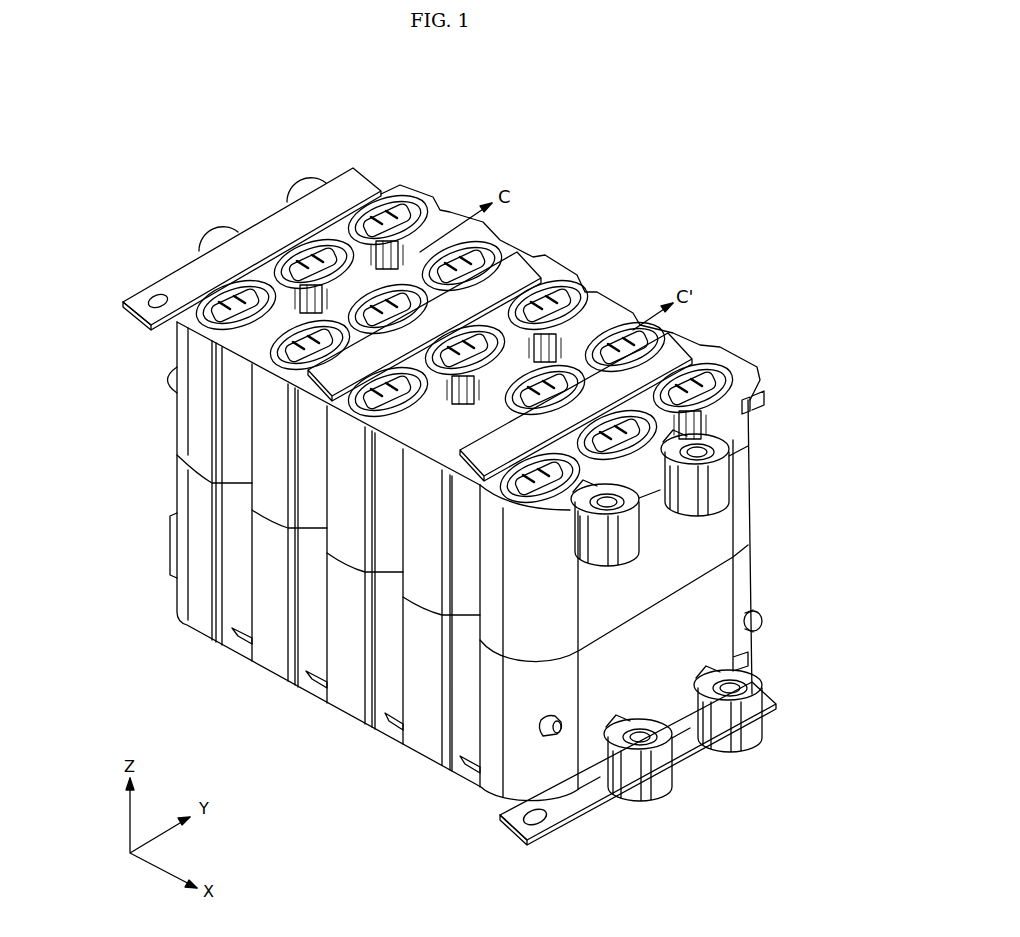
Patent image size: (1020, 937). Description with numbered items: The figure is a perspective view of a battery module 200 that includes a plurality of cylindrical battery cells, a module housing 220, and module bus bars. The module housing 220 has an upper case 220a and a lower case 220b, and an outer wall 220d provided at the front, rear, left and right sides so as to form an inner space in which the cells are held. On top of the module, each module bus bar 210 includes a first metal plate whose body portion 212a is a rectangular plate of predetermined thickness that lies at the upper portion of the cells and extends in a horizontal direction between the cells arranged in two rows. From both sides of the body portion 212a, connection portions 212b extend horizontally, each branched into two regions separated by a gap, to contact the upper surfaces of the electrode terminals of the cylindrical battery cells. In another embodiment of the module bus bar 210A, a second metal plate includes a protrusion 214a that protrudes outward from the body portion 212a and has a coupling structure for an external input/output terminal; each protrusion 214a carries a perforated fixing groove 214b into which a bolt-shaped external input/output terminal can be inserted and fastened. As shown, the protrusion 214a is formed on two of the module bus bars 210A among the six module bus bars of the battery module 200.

The battery module 200 is at (257, 96).
The module bus bar 210 is at (524, 263).
The module bus bar 210A is at (375, 175).
The body portion 212a is at (700, 368).
The connection portion 212b is at (735, 425).
The protrusion 214a is at (128, 305).
The fixing groove 214b is at (156, 296).
The module housing 220 is at (106, 404).
The upper case 220a is at (196, 418).
The lower case 220b is at (196, 545).
The outer wall 220d is at (345, 640).